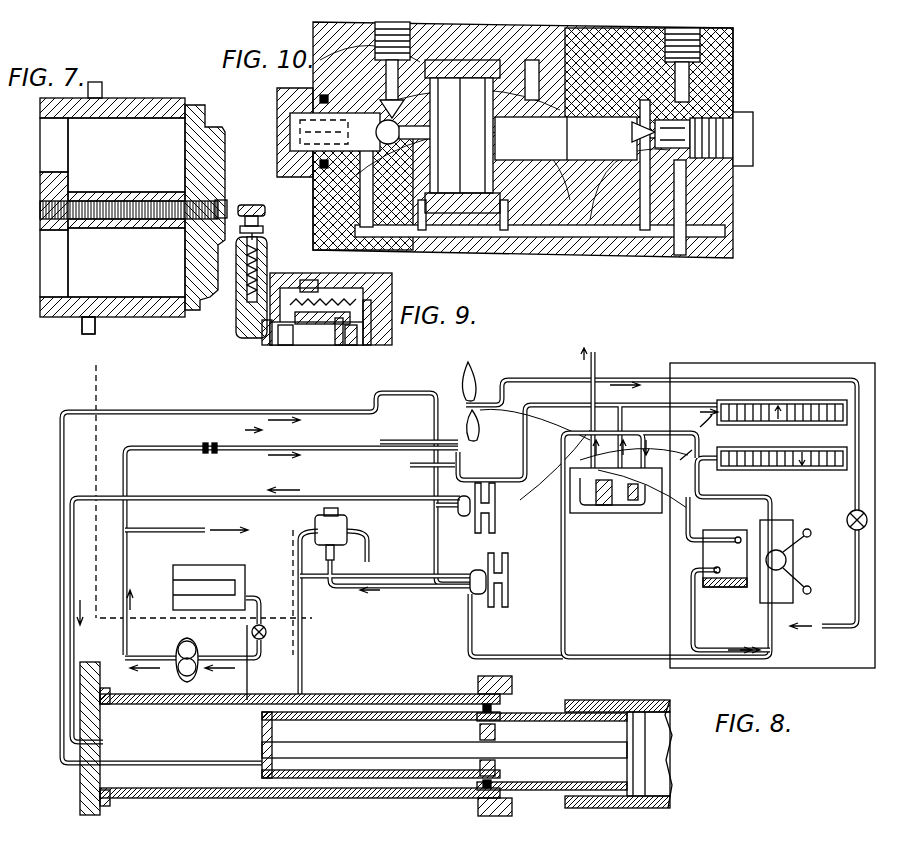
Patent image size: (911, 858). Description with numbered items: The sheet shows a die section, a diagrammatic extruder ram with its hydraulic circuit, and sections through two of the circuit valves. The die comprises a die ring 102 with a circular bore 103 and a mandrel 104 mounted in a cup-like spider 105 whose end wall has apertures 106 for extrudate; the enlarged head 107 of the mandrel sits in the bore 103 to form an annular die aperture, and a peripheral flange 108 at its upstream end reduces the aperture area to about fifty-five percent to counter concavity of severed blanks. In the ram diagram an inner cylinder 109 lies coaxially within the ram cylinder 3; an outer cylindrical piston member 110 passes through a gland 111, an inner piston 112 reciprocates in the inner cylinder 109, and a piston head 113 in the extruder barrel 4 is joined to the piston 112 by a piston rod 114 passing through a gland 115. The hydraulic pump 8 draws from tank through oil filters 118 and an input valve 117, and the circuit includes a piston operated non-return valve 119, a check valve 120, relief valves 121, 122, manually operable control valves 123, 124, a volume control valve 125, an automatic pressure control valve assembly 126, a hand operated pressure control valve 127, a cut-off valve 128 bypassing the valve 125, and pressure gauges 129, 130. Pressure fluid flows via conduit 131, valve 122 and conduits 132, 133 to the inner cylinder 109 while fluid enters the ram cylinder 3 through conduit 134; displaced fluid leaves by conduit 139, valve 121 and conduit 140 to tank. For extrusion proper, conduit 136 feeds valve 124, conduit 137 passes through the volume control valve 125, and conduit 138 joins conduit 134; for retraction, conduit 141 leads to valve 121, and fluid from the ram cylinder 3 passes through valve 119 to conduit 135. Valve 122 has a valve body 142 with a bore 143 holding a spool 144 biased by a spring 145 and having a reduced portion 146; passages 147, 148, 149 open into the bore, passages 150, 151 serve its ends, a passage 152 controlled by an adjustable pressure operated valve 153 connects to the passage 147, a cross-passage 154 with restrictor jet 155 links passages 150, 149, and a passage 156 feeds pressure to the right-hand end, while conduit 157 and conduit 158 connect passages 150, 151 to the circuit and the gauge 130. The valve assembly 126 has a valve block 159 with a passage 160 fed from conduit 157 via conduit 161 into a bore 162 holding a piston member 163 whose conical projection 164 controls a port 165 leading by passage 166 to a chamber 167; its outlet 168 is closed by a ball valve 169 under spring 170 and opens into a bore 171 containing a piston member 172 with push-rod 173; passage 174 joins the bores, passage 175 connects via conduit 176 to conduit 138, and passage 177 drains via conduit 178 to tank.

In FIG. 7, the die ring 102 is at (185, 305).
In FIG. 7, the bore 103 is at (185, 176).
In FIG. 7, the mandrel 104 is at (130, 222).
In FIG. 7, the spider 105 is at (120, 312).
In FIG. 7, the apertures 106 is at (62, 262).
In FIG. 7, the head 107 is at (222, 178).
In FIG. 7, the flange 108 is at (180, 250).
In FIG. 10, the valve block 159 is at (733, 92).
In FIG. 10, the passage 160 is at (705, 62).
In FIG. 8, the passage 160 is at (658, 470).
In FIG. 10, the cylindrical bore 162 is at (607, 128).
In FIG. 10, the piston member 163 is at (645, 230).
In FIG. 10, the conical projection 164 is at (680, 255).
In FIG. 10, the port 165 is at (725, 190).
In FIG. 10, the passage 166 is at (705, 205).
In FIG. 10, the chamber 167 is at (315, 195).
In FIG. 10, the outlet 168 is at (422, 240).
In FIG. 10, the ball valve 169 is at (313, 170).
In FIG. 10, the spring 170 is at (278, 100).
In FIG. 10, the cylindrical bore 171 is at (470, 215).
In FIG. 10, the piston member 172 is at (505, 225).
In FIG. 10, the push-rod 173 is at (520, 138).
In FIG. 10, the passage 174 is at (641, 138).
In FIG. 10, the passage 175 is at (543, 99).
In FIG. 8, the passage 175 is at (664, 496).
In FIG. 10, the passage 177 is at (320, 55).
In FIG. 8, the passage 177 is at (535, 444).
In FIG. 9, the valve body 142 is at (392, 283).
In FIG. 9, the cylindrical bore 143 is at (352, 285).
In FIG. 9, the spool 144 is at (380, 340).
In FIG. 9, the spring 145 is at (290, 280).
In FIG. 9, the reduced cross-section portion 146 is at (320, 285).
In FIG. 9, the passage 147 is at (288, 350).
In FIG. 9, the passage 148 is at (320, 330).
In FIG. 9, the passage 149 is at (352, 345).
In FIG. 9, the passage 150 is at (270, 338).
In FIG. 9, the passage 151 is at (370, 340).
In FIG. 9, the passage 152 is at (255, 340).
In FIG. 9, the adjustable pressure operated valve 153 is at (247, 310).
In FIG. 9, the cross-passage 154 is at (338, 340).
In FIG. 9, the restrictor jet 155 is at (268, 345).
In FIG. 9, the passage 156 is at (388, 325).
In FIG. 8, the ram cylinder 3 is at (400, 698).
In FIG. 8, the extruder barrel 4 is at (640, 702).
In FIG. 8, the hydraulic pump 8 is at (196, 674).
In FIG. 8, the inner cylinder 109 is at (247, 700).
In FIG. 8, the outer cylindrical piston member 110 is at (530, 712).
In FIG. 8, the gland 111 is at (480, 698).
In FIG. 8, the inner piston 112 is at (262, 748).
In FIG. 8, the piston head 113 is at (660, 752).
In FIG. 8, the piston rod 114 is at (563, 758).
In FIG. 8, the gland 115 is at (500, 755).
In FIG. 8, the input valve 117 is at (252, 632).
In FIG. 8, the oil filters 118 is at (240, 580).
In FIG. 8, the piston operated non-return valve 119 is at (318, 523).
In FIG. 8, the check valve 120 is at (210, 440).
In FIG. 8, the relief valve 121 is at (478, 385).
In FIG. 8, the relief valve 122 is at (460, 425).
In FIG. 8, the manually operable control valve 123 is at (496, 510).
In FIG. 8, the manually operable control valve 124 is at (510, 570).
In FIG. 8, the volume control valve 125 is at (728, 587).
In FIG. 8, the automatic pressure control valve assembly 126 is at (608, 513).
In FIG. 8, the hand operated pressure control valve 127 is at (850, 512).
In FIG. 8, the hand operated cut-off valve 128 is at (796, 560).
In FIG. 8, the pressure gauge 129 is at (830, 447).
In FIG. 8, the pressure gauge 130 is at (735, 400).
In FIG. 8, the conduit 131 is at (312, 448).
In FIG. 8, the conduit 132 is at (455, 490).
In FIG. 8, the conduit 133 is at (236, 498).
In FIG. 8, the conduit 134 is at (302, 652).
In FIG. 8, the conduit 135 is at (370, 560).
In FIG. 8, the conduit 136 is at (436, 547).
In FIG. 8, the conduit 137 is at (575, 660).
In FIG. 8, the conduit 138 is at (563, 550).
In FIG. 8, the conduit 139 is at (370, 411).
In FIG. 8, the conduit 140 is at (455, 442).
In FIG. 8, the conduit 141 is at (425, 465).
In FIG. 8, the conduit 157 is at (540, 372).
In FIG. 8, the conduit 158 is at (590, 405).
In FIG. 8, the conduit 161 is at (640, 390).
In FIG. 8, the conduit 176 is at (622, 445).
In FIG. 8, the conduit 178 is at (610, 407).